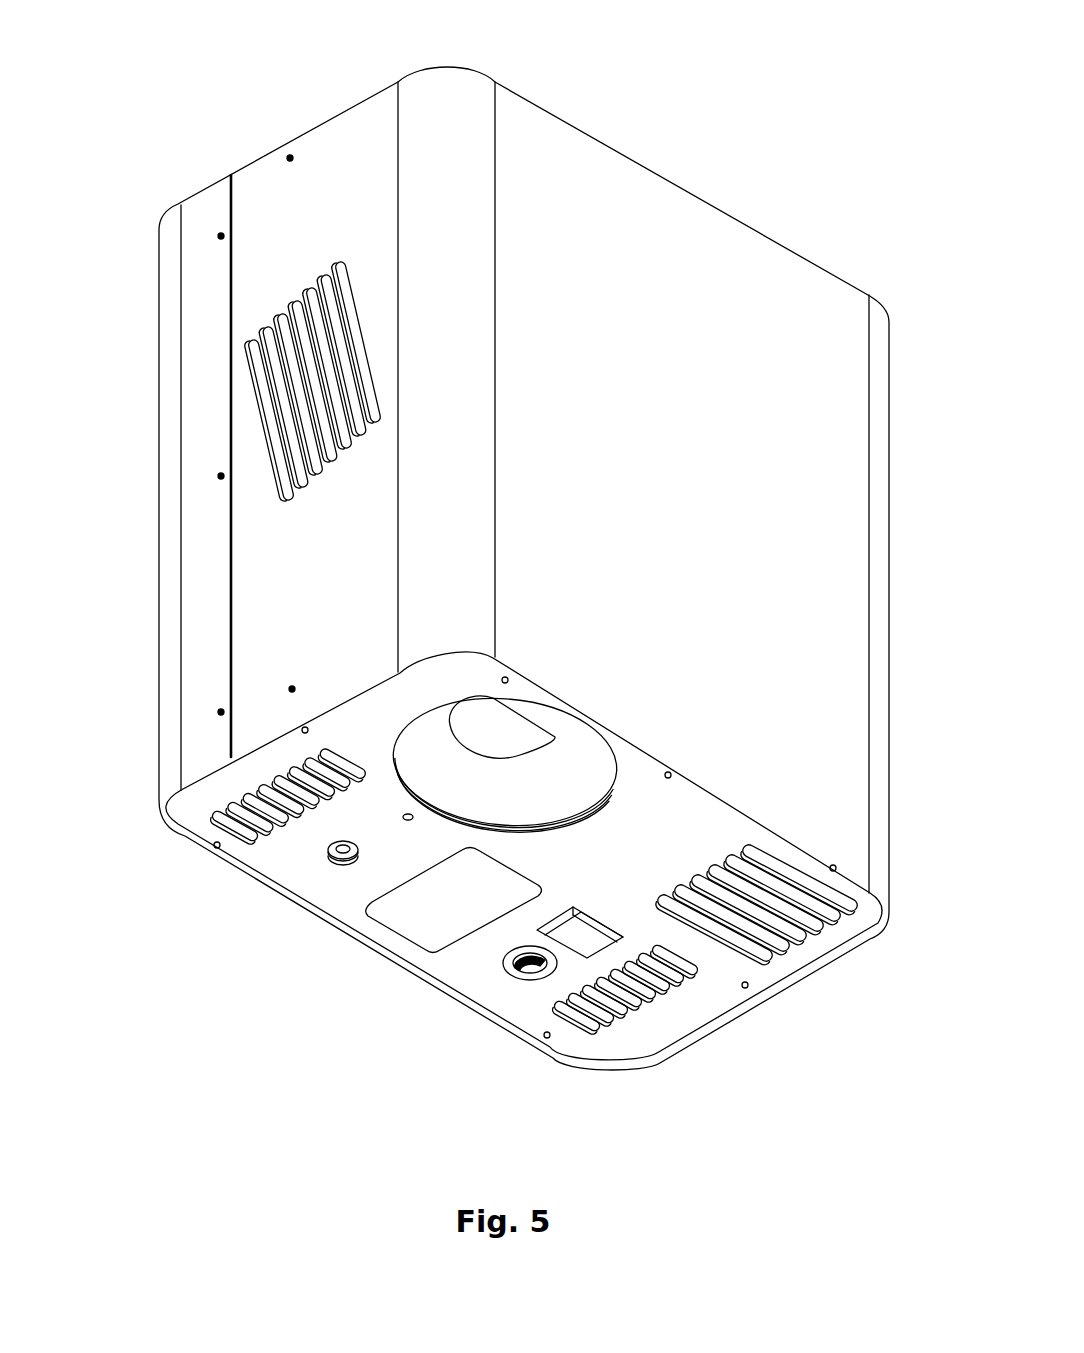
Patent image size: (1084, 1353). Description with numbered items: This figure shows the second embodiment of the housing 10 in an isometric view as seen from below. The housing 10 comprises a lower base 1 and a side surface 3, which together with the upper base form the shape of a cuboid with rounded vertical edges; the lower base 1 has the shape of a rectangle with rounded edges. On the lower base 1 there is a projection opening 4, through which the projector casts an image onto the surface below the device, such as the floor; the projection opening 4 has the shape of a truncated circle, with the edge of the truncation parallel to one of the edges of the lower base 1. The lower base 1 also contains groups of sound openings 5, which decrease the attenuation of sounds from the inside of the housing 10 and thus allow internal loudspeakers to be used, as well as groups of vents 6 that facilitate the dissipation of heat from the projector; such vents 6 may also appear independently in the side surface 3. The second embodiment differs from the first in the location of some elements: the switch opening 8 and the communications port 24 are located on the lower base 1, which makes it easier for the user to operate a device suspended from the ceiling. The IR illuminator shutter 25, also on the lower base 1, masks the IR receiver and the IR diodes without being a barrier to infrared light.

The housing 10 is at (655, 132).
The side surface 3 is at (648, 320).
The lower base 1 is at (358, 711).
The group of vents 6 is at (315, 378).
The group of sound openings 5 is at (278, 803).
The projection opening 4 is at (473, 803).
The IR illuminator shutter 25 is at (418, 900).
The communications port 24 is at (585, 942).
The switch opening 8 is at (517, 967).